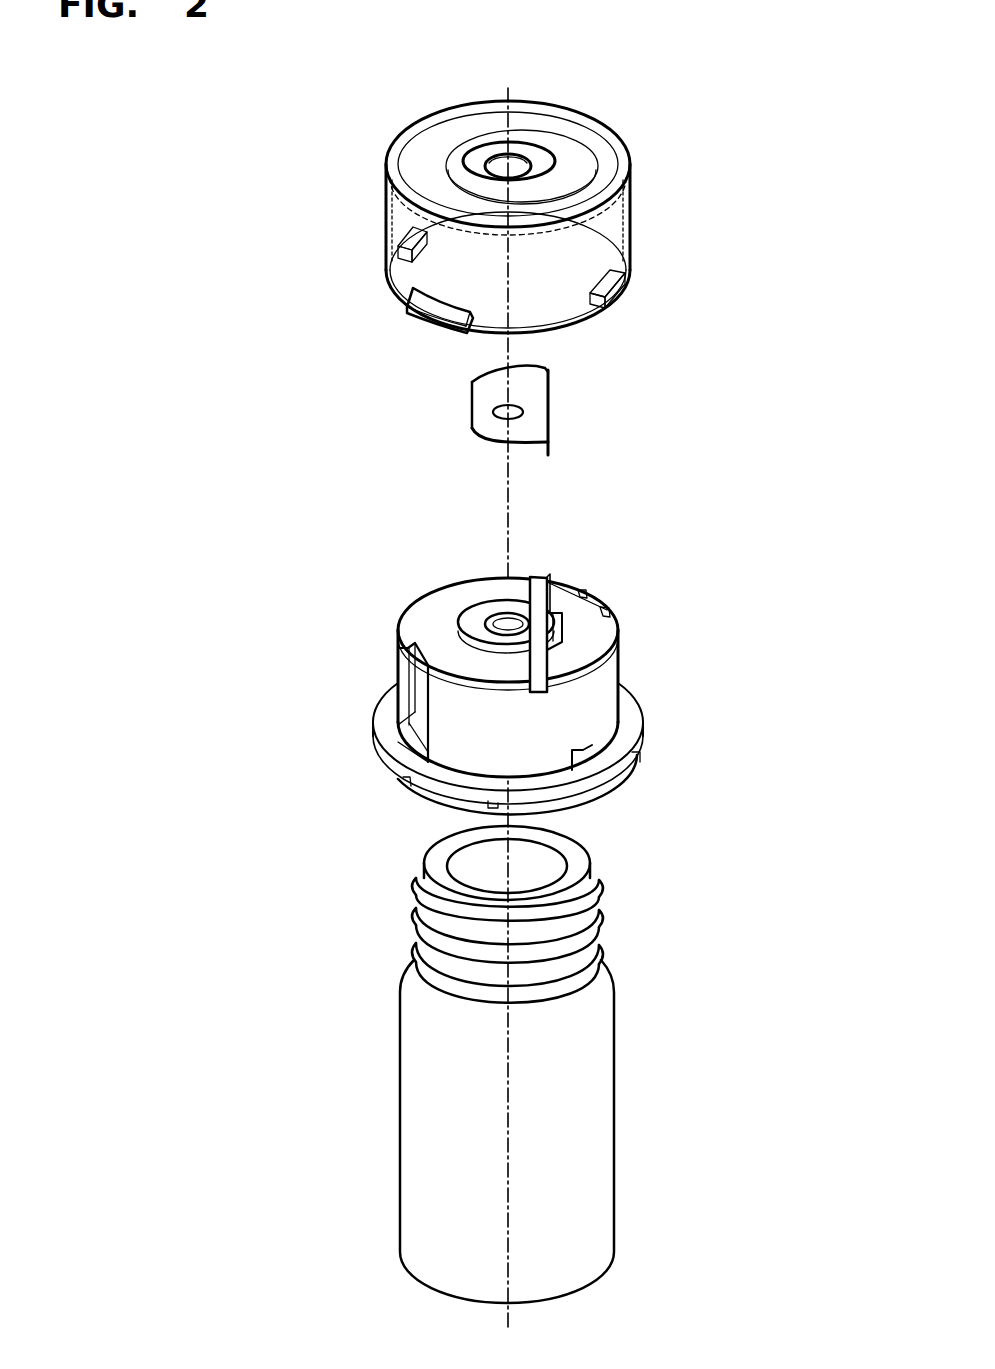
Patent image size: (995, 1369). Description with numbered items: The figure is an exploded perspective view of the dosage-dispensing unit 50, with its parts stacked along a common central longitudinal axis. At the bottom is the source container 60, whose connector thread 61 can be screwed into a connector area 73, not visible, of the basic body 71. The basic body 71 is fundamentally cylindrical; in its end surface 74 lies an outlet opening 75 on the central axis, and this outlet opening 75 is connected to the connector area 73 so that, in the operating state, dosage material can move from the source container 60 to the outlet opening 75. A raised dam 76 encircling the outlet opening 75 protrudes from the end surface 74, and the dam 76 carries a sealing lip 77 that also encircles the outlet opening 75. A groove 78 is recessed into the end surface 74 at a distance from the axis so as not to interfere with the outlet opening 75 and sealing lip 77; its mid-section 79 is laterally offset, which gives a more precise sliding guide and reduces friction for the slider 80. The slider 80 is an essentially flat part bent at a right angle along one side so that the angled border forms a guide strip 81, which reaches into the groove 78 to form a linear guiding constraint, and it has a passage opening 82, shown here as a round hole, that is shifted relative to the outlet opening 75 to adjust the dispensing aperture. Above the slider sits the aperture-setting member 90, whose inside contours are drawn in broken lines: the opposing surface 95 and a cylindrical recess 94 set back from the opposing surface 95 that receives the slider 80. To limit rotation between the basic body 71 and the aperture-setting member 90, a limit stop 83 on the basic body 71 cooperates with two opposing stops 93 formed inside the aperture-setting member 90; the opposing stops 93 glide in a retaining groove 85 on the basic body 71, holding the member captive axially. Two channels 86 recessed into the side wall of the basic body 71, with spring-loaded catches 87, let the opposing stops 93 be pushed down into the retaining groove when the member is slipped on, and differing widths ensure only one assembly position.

The dosage-dispensing unit 50 is at (378, 105).
The source container 60 is at (575, 1083).
The connector thread 61 is at (577, 930).
The basic body 71 is at (590, 690).
The connector area 73 is at (603, 811).
The end surface 74 is at (433, 633).
The outlet opening 75 is at (503, 620).
The raised dam 76 is at (473, 620).
The sealing lip 77 is at (488, 615).
The groove 78 is at (550, 587).
The mid-section of the groove 79 is at (565, 632).
The slider 80 is at (533, 387).
The guide strip 81 is at (551, 449).
The passage opening 82 is at (523, 409).
The limit stop 83 is at (560, 762).
The retaining groove 85 is at (624, 732).
The channels 86 is at (422, 688).
The spring-loaded catches 87 is at (420, 725).
The aperture-setting member 90 is at (403, 213).
The opposing stops 93 is at (404, 253).
The cylindrical recess 94 is at (568, 163).
The opposing surface 95 is at (605, 162).